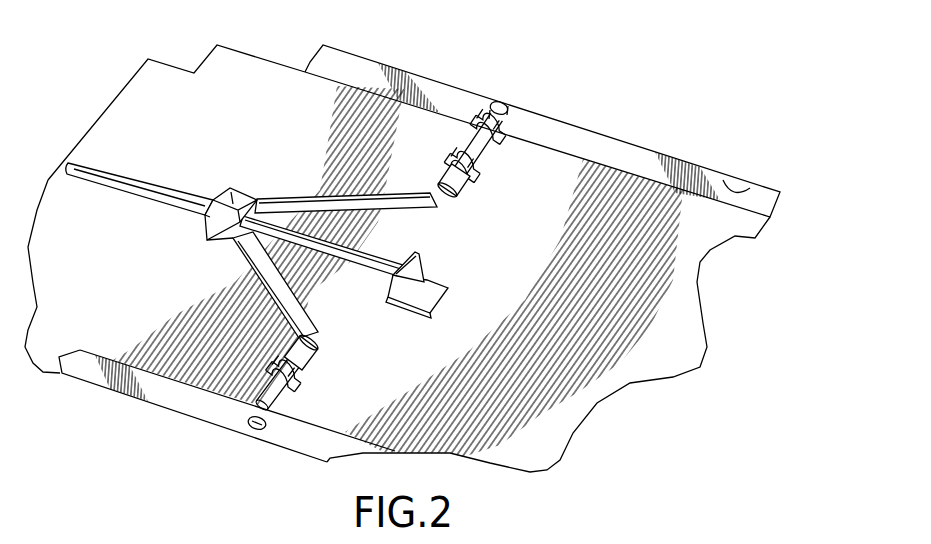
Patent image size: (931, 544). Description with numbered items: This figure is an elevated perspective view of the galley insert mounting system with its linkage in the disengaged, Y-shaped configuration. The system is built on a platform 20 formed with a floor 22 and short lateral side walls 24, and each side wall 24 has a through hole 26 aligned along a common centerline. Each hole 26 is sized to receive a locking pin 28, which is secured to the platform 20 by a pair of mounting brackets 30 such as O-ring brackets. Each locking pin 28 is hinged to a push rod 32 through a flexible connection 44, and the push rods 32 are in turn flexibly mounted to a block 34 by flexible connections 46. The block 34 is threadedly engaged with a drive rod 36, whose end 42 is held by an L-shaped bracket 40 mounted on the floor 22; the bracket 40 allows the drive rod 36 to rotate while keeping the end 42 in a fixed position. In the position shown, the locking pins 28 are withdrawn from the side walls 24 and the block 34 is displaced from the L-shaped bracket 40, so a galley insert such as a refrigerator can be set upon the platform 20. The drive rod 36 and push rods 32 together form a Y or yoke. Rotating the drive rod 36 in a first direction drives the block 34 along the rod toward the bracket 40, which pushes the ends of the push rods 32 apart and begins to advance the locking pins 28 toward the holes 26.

The platform 20 is at (217, 97).
The floor 22 is at (535, 456).
The lateral side walls 24 is at (757, 190).
The through hole 26 is at (500, 105).
The locking pin 28 is at (473, 160).
The mounting brackets 30 is at (497, 155).
The push rod 32 is at (392, 210).
The block 34 is at (229, 190).
The drive rod 36 is at (147, 195).
The L-shaped bracket 40 is at (450, 290).
The end of the drive rod 42 is at (412, 272).
The flexible connection 44 is at (455, 225).
The flexible connections 46 is at (228, 240).